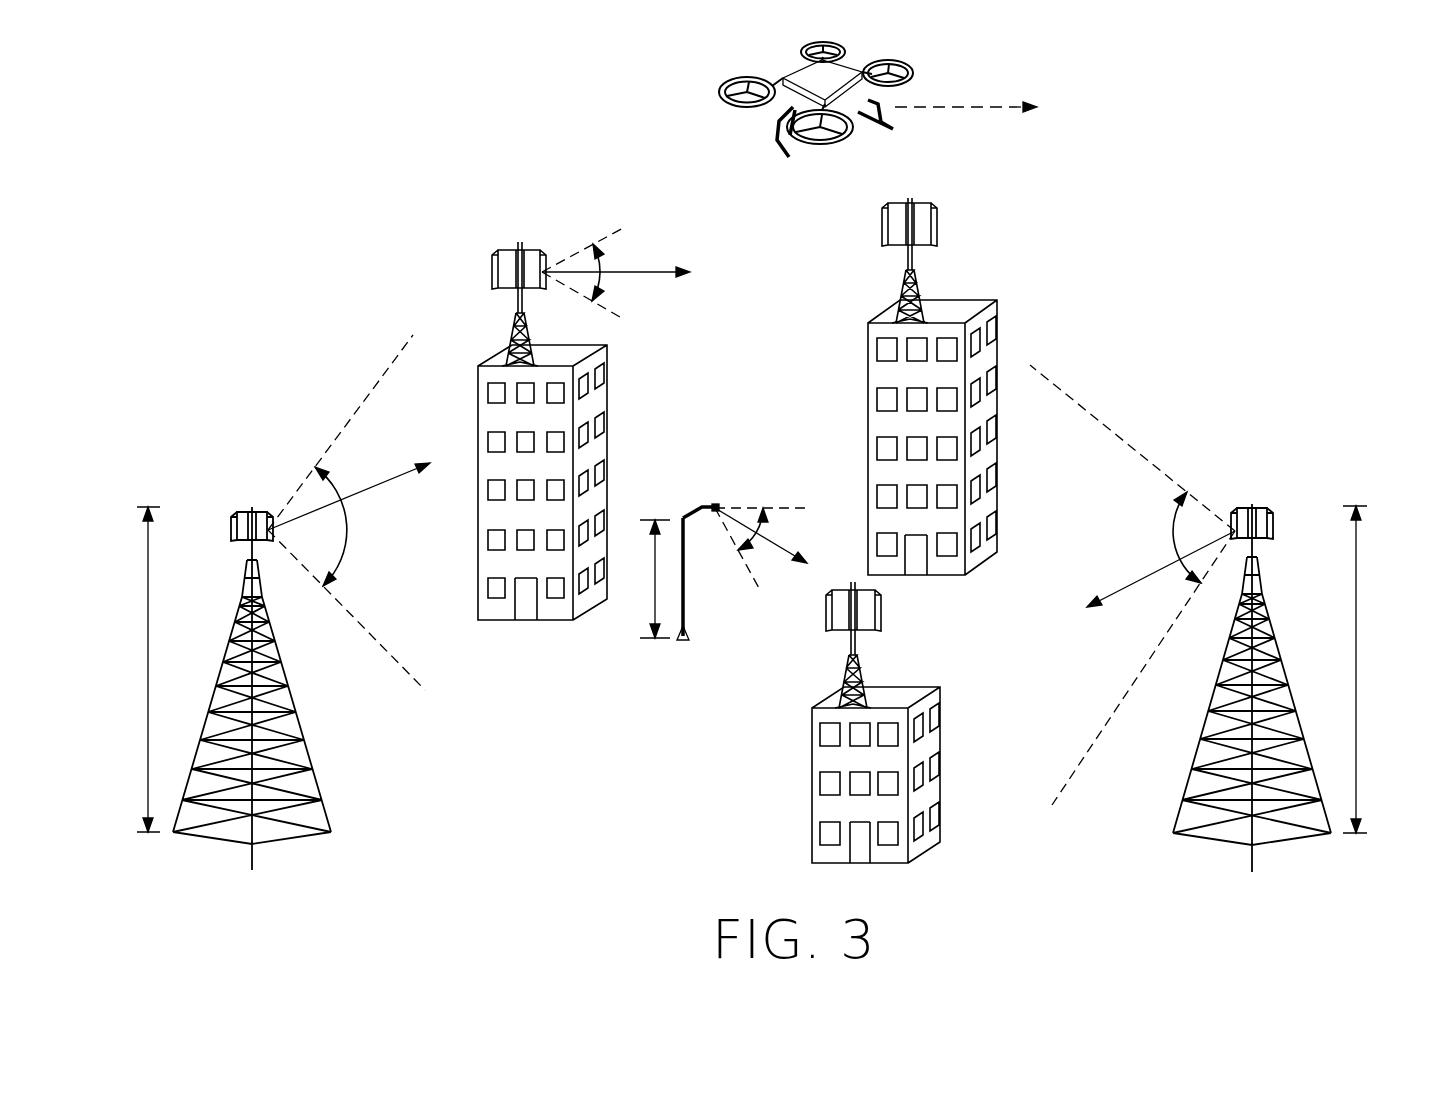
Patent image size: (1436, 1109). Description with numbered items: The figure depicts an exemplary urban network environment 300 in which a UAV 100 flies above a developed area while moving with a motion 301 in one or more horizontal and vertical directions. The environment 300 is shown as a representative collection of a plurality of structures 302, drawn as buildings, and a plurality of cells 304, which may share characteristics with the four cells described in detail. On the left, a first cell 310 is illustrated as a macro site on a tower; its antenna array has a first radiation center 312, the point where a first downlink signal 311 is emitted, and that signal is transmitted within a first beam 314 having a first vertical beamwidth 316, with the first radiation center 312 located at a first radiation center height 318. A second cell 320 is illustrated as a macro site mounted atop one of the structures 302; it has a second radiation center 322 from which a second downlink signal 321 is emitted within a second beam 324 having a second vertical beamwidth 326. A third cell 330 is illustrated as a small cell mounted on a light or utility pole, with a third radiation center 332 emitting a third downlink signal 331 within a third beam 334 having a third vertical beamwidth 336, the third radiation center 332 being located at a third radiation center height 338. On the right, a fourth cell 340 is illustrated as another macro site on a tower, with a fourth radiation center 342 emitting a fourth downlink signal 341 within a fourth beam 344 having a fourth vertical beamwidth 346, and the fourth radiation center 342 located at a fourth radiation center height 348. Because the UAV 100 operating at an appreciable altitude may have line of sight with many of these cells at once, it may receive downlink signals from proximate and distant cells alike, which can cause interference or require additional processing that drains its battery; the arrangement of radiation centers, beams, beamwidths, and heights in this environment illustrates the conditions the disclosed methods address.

The UAV 100 is at (883, 158).
The urban network environment 300 is at (1250, 133).
The motion 301 is at (985, 107).
The structures 302 is at (1000, 448).
The cells 304 is at (898, 296).
The first cell 310 is at (300, 752).
The first downlink signal 311 is at (383, 485).
The first radiation center 312 is at (272, 530).
The first beam 314 is at (328, 450).
The first vertical beamwidth 316 is at (348, 548).
The first radiation center height 318 is at (148, 590).
The second cell 320 is at (505, 337).
The second downlink signal 321 is at (648, 278).
The second radiation center 322 is at (545, 265).
The second beam 324 is at (587, 234).
The second vertical beamwidth 326 is at (603, 268).
The third cell 330 is at (687, 600).
The third downlink signal 331 is at (778, 565).
The third radiation center 332 is at (720, 506).
The third beam 334 is at (780, 507).
The third vertical beamwidth 336 is at (770, 530).
The third radiation center height 338 is at (655, 603).
The fourth cell 340 is at (1207, 752).
The fourth downlink signal 341 is at (1142, 578).
The fourth radiation center 342 is at (1233, 524).
The fourth beam 344 is at (1148, 458).
The fourth vertical beamwidth 346 is at (1186, 588).
The fourth radiation center height 348 is at (1357, 592).